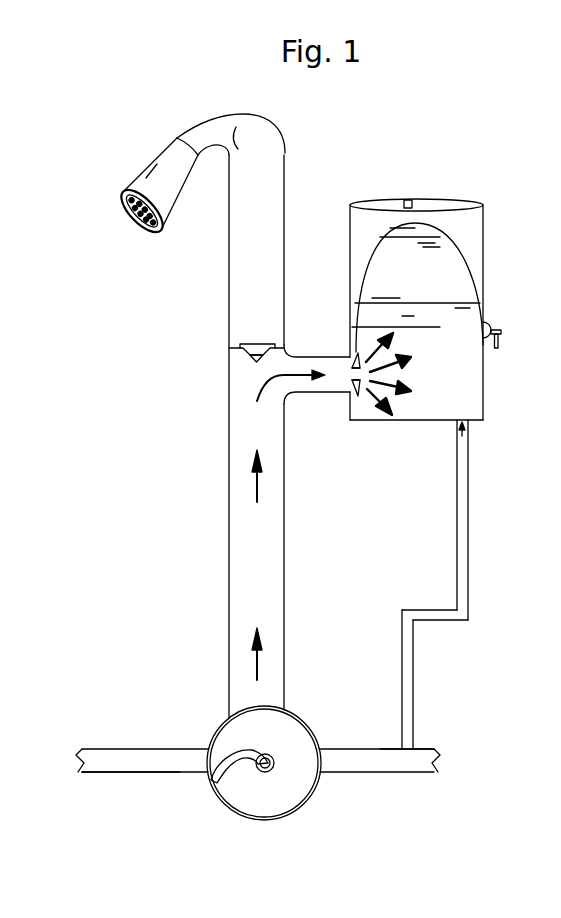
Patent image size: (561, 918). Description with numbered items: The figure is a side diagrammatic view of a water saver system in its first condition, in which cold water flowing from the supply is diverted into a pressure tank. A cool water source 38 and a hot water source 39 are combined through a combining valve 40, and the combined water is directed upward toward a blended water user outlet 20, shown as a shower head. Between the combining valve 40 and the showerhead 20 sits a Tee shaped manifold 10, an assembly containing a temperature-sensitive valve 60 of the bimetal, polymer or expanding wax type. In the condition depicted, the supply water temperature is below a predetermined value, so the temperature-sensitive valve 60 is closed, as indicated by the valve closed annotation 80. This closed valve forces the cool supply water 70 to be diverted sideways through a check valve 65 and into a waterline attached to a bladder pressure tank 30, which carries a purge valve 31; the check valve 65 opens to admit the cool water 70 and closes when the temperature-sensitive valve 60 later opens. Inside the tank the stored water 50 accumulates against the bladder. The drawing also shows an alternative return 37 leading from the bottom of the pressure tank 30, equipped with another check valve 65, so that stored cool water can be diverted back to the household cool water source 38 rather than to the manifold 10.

The Tee shaped manifold 10 is at (303, 201).
The blended water user outlet 20 is at (151, 162).
The bladder pressure tank 30 is at (484, 231).
The purge valve 31 is at (504, 331).
The return 37 is at (469, 525).
The cool water source 38 is at (432, 749).
The hot water source 39 is at (120, 774).
The combining valve 40 is at (218, 745).
The heating element 50 is at (470, 258).
The temperature-sensitive valve 60 is at (257, 343).
The check valve 65 is at (352, 364).
The cool supply water 70 is at (283, 377).
The valve closed indicator 80 is at (125, 374).